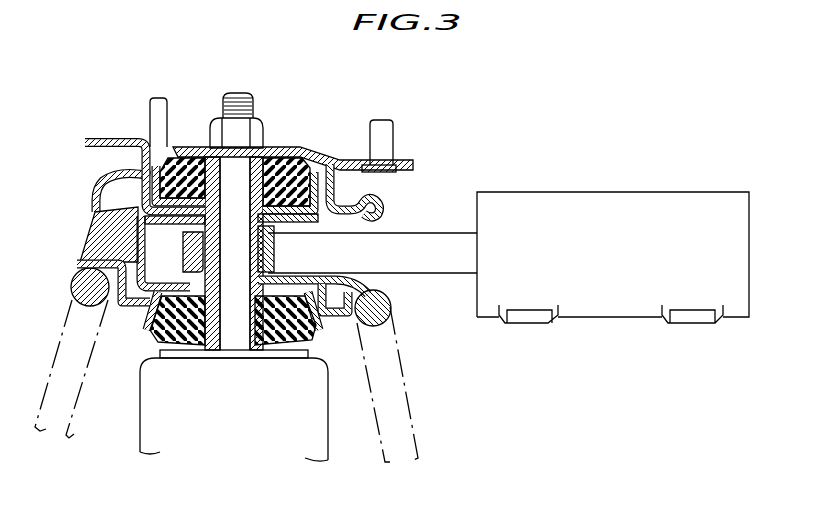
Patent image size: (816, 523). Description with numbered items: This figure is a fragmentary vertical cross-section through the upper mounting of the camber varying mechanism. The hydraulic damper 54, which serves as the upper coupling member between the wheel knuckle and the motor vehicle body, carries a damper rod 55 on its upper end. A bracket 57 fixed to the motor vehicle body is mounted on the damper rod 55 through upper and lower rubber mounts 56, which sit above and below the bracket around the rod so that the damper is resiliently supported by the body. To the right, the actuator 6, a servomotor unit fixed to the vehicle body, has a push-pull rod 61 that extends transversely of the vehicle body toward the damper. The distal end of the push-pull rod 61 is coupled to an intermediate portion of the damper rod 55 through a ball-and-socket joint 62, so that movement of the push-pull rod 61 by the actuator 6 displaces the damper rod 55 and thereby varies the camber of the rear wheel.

The actuator 6 is at (600, 196).
The hydraulic damper 54 is at (98, 446).
The damper rod 55 is at (243, 170).
The rubber mounts 56 is at (200, 158).
The bracket 57 is at (103, 139).
The push-pull rod 61 is at (417, 237).
The ball-and-socket joint 62 is at (195, 254).